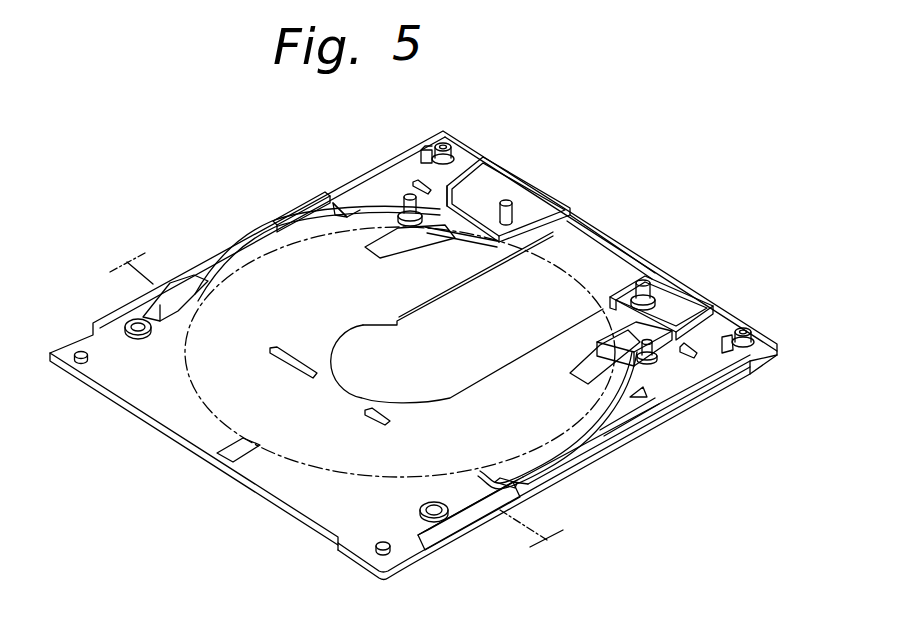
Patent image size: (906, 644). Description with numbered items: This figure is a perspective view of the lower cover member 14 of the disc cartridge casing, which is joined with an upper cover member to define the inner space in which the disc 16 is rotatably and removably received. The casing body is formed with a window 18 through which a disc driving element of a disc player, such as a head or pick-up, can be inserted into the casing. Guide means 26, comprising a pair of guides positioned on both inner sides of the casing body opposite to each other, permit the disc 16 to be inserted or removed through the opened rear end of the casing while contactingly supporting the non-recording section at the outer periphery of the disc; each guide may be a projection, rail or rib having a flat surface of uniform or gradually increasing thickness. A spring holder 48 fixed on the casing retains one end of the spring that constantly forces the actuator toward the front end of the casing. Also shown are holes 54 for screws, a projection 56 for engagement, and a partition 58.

The lower cover member 14 is at (557, 475).
The disc 16 is at (268, 255).
The window 18 is at (588, 263).
The guide means 26 is at (182, 280).
The spring holder 48 is at (500, 211).
The hole for the screw 54 is at (452, 140).
The projection for engagement 56 is at (306, 205).
The partition 58 is at (697, 307).